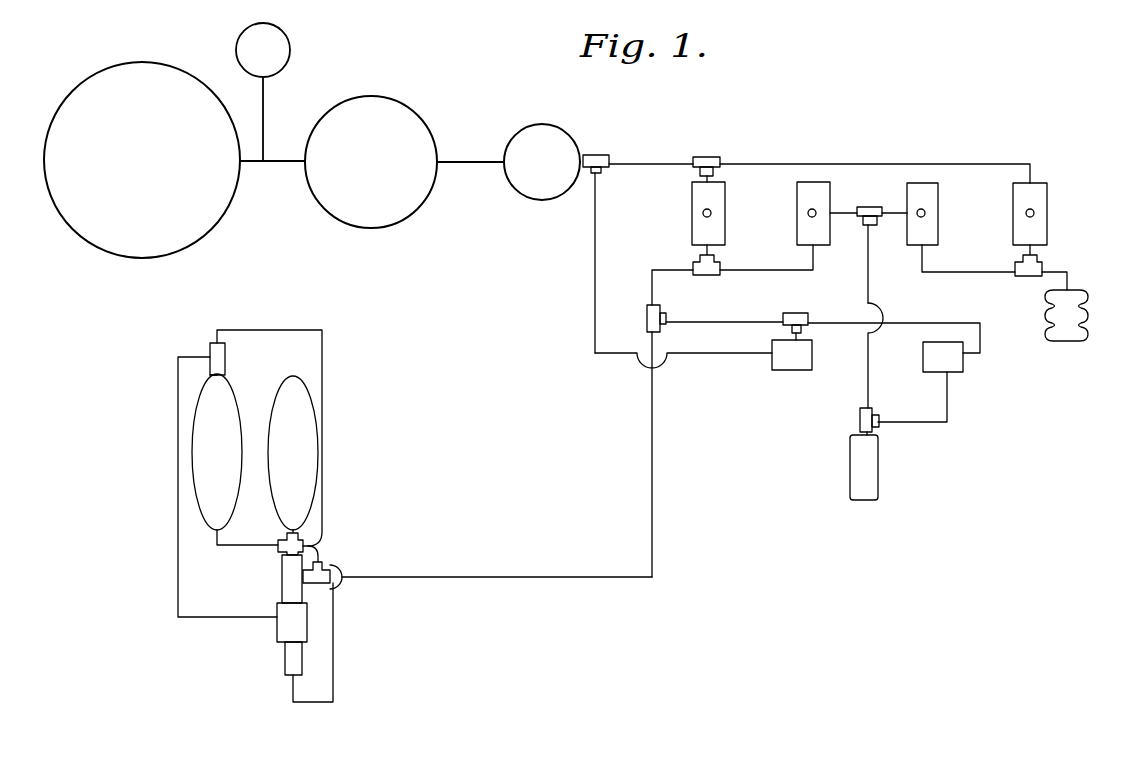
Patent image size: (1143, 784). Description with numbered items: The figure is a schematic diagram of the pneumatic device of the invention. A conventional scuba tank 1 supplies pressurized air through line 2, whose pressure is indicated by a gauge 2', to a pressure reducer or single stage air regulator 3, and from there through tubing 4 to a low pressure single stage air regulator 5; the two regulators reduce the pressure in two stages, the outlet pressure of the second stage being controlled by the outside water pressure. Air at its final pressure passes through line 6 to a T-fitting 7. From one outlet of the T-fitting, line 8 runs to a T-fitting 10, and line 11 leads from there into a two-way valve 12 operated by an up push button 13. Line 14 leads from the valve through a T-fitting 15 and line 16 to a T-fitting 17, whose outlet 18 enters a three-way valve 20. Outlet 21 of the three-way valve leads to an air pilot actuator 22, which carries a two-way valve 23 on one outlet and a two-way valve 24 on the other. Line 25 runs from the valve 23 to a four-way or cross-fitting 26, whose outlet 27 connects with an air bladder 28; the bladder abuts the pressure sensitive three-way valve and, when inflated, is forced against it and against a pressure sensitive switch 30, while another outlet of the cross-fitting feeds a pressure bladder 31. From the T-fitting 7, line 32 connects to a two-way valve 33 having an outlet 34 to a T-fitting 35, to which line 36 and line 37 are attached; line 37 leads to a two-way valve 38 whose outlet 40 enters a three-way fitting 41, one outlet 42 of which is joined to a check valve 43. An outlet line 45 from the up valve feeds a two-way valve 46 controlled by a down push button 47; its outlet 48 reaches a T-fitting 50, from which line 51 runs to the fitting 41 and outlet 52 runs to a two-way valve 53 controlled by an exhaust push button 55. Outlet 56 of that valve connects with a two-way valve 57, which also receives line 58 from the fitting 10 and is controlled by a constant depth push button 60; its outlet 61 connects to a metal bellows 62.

The scuba tank 1 is at (188, 84).
The gauge 2' is at (277, 46).
The line 2 is at (272, 119).
The single stage air regulator 3 is at (410, 125).
The tubing 4 is at (480, 146).
The low pressure single stage air regulator 5 is at (565, 144).
The line 6 is at (592, 156).
The T-fitting 7 is at (603, 170).
The line 8 is at (654, 152).
The T-fitting 10 is at (705, 157).
The line 11 is at (712, 180).
The two-way valve 12 is at (702, 232).
The up push button 13 is at (702, 213).
The line 14 is at (656, 268).
The T-fitting 15 is at (646, 316).
The line 16 is at (512, 570).
The T-fitting 17 is at (336, 572).
The outlet 18 is at (300, 320).
The three-way valve 20 is at (210, 345).
The outlet 21 is at (178, 405).
The air pilot actuator 22 is at (277, 630).
The two-way valve 23 is at (285, 658).
The two-way valve 24 is at (281, 590).
The line 25 is at (306, 704).
The cross-fitting 26 is at (278, 550).
The outlet 27 is at (222, 540).
The air bladder 28 is at (226, 405).
The pressure sensitive switch 30 is at (210, 375).
The pressure bladder 31 is at (300, 420).
The line 32 is at (594, 297).
The two-way valve 33 is at (790, 371).
The outlet 34 is at (800, 338).
The T-fitting 35 is at (800, 306).
The line 36 is at (712, 321).
The line 37 is at (838, 320).
The two-way valve 38 is at (940, 356).
The outlet 40 is at (950, 394).
The three-way fitting 41 is at (858, 420).
The outlet 42 is at (880, 430).
The check valve 43 is at (862, 478).
The outlet line 45 is at (742, 270).
The two-way valve 46 is at (813, 190).
The down push button 47 is at (838, 164).
The outlet 48 is at (848, 212).
The T-fitting 50 is at (864, 228).
The line 51 is at (880, 312).
The outlet 52 is at (890, 216).
The two-way valve 53 is at (925, 190).
The exhaust push button 55 is at (925, 213).
The outlet 56 is at (950, 274).
The two-way valve 57 is at (1034, 238).
The line 58 is at (1035, 170).
The constant depth push button 60 is at (1036, 213).
The outlet 61 is at (1070, 278).
The metal bellows 62 is at (1082, 313).